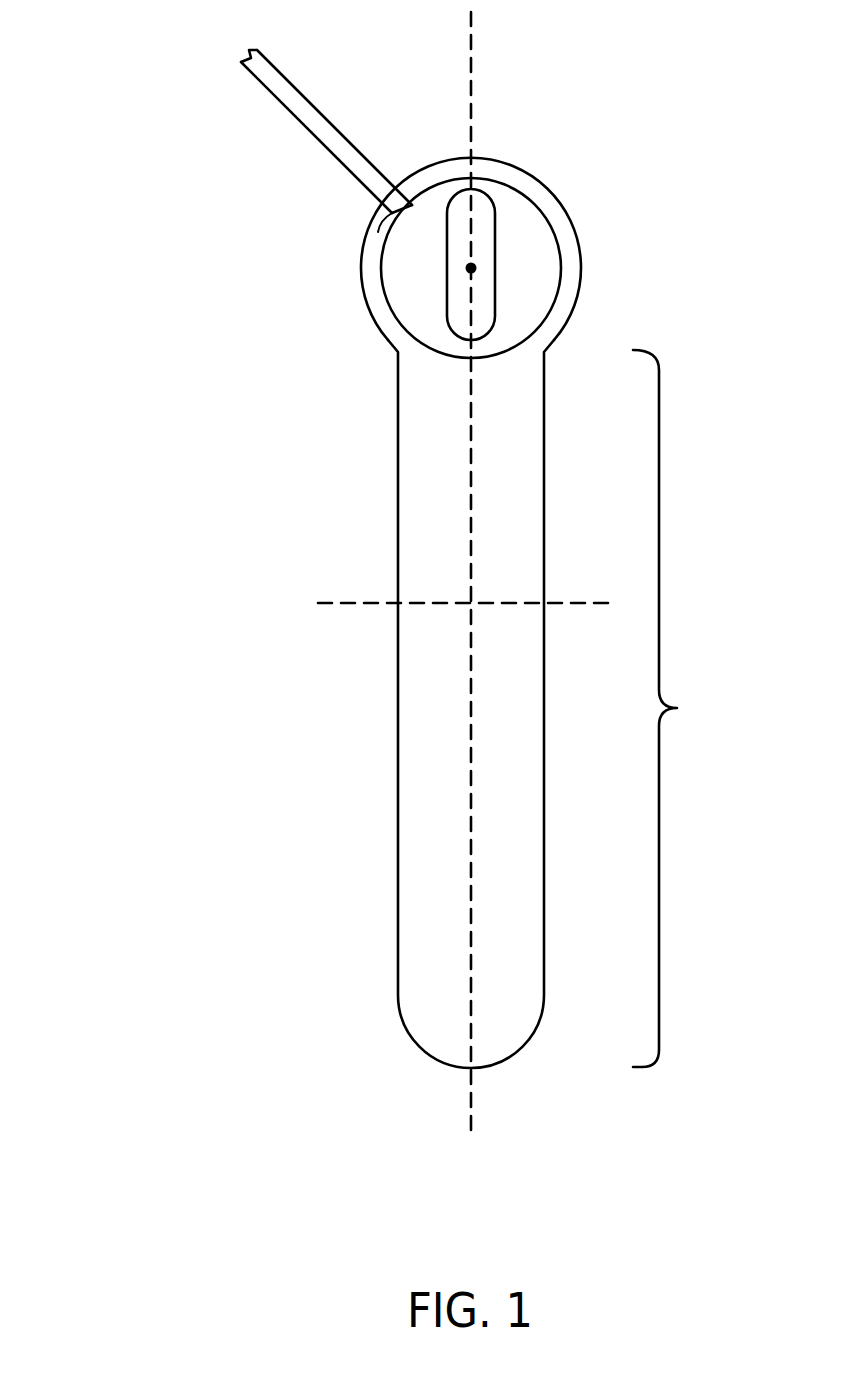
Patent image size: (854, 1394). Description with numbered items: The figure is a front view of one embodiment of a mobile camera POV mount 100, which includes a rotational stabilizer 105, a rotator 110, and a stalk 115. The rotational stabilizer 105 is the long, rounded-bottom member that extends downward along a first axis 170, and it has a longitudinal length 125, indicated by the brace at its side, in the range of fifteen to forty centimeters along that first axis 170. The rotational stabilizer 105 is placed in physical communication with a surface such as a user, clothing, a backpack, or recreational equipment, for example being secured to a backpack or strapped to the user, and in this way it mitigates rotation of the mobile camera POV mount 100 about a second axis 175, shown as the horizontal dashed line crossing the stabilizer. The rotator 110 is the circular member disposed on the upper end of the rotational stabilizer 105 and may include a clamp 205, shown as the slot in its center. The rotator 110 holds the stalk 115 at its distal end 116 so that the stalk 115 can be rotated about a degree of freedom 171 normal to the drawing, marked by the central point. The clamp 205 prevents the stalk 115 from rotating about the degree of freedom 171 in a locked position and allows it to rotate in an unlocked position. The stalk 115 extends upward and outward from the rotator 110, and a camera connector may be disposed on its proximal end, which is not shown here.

The mobile camera POV mount 100 is at (104, 75).
The rotational stabilizer 105 is at (398, 528).
The rotator 110 is at (397, 322).
The stalk 115 is at (309, 132).
The distal end 116 is at (385, 210).
The longitudinal length 125 is at (678, 708).
The first axis 170 is at (472, 132).
The degree of freedom 171 is at (471, 268).
The second axis 175 is at (360, 603).
The clamp 205 is at (495, 267).